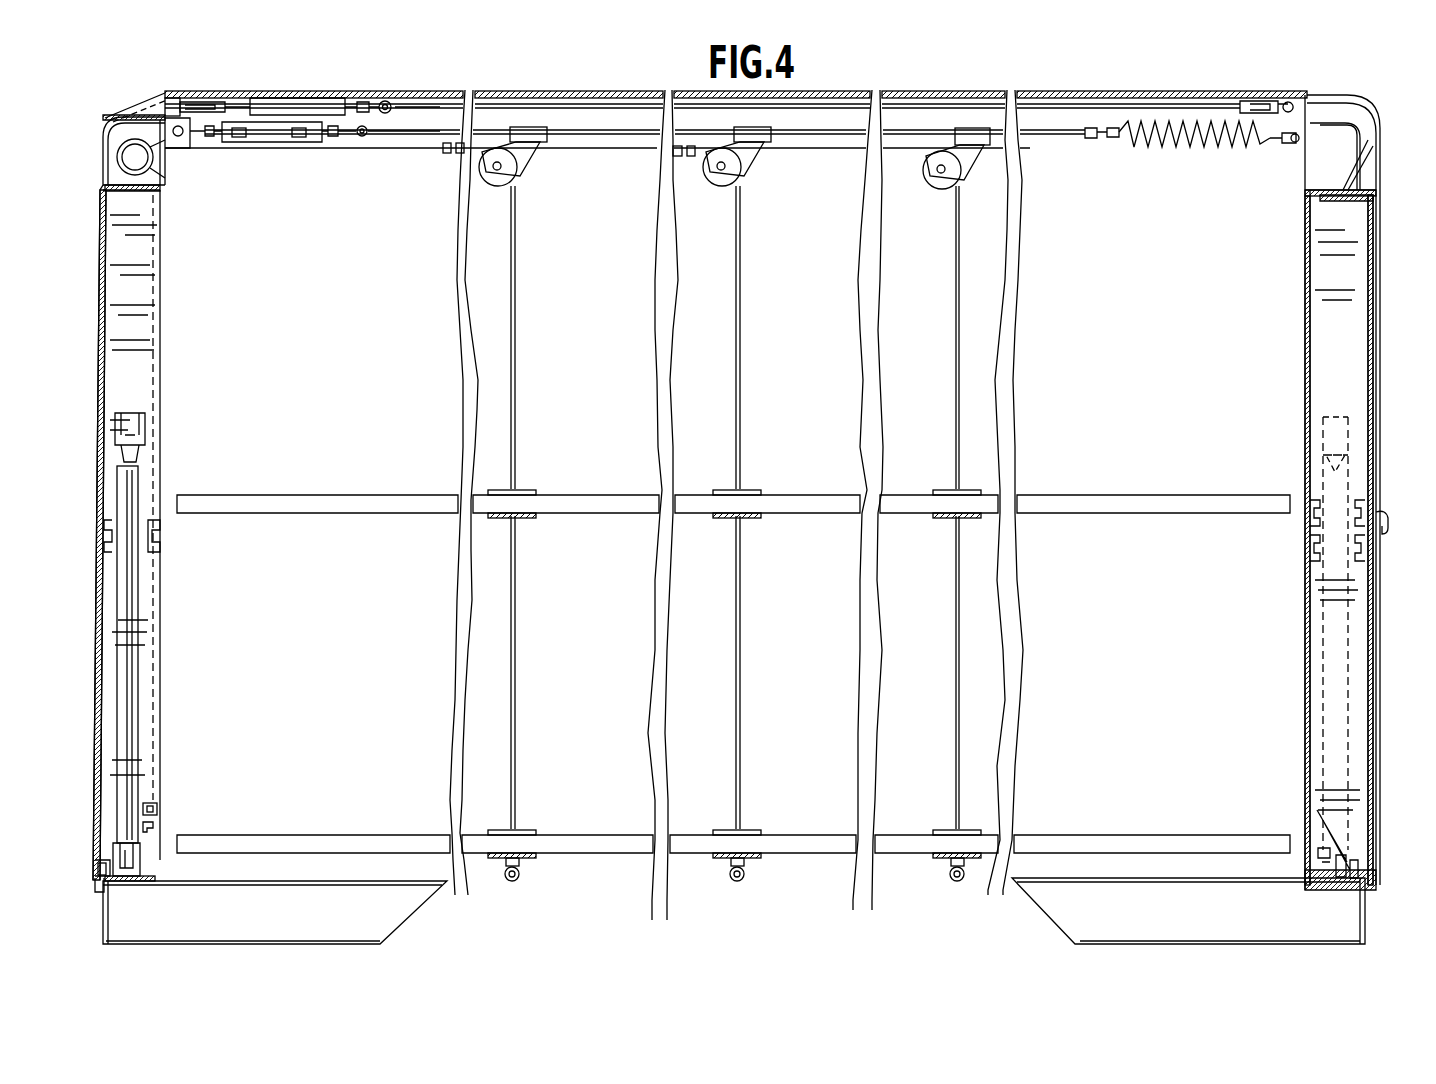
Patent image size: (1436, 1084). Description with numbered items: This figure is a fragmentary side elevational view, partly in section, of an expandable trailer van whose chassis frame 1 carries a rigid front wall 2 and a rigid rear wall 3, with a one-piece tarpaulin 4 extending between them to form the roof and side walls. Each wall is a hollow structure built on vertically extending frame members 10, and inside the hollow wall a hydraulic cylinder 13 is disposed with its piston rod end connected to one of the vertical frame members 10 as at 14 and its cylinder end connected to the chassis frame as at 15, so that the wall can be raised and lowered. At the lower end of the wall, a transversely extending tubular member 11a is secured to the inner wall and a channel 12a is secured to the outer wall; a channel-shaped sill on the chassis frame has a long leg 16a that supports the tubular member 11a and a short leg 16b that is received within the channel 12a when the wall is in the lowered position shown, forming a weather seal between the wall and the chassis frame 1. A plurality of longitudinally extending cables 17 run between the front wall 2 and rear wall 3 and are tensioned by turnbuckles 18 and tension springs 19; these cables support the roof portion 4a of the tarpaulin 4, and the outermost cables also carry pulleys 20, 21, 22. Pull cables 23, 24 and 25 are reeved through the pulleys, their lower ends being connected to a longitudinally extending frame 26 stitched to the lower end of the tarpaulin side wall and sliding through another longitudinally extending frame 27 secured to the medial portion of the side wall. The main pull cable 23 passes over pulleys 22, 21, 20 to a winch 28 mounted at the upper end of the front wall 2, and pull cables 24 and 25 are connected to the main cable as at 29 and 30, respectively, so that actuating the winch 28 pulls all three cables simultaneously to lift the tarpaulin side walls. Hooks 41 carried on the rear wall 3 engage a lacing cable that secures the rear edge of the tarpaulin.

The chassis frame 1 is at (242, 934).
The rigid front wall 2 is at (97, 392).
The rigid rear wall 3 is at (1380, 292).
The one-piece tarpaulin 4 is at (574, 846).
The roof portion 4a is at (846, 96).
The vertically extending frame member 10 is at (162, 534).
The tubular member 11a is at (159, 802).
The channel 12a is at (97, 864).
The hydraulic cylinder 13 is at (148, 630).
The piston rod end connection 14 is at (142, 438).
The cylinder end connection 15 is at (142, 855).
The long leg 16a is at (156, 824).
The short leg 16b is at (102, 892).
The longitudinally extending cables 17 is at (602, 132).
The turnbuckles 18 is at (306, 98).
The tension springs 19 is at (1152, 152).
The pulley 20 is at (519, 174).
The pulley 21 is at (738, 172).
The pulley 22 is at (932, 186).
The main pull cable 23 is at (326, 158).
The pull cable 24 is at (740, 394).
The pull cable 25 is at (518, 410).
The longitudinally extending frame 26 is at (780, 857).
The longitudinally extending frame 27 is at (564, 488).
The winch 28 is at (148, 163).
The connection of pull cable 24 to main cable 29 is at (450, 156).
The connection of pull cable 25 to main cable 30 is at (696, 155).
The hooks 41 is at (1368, 158).